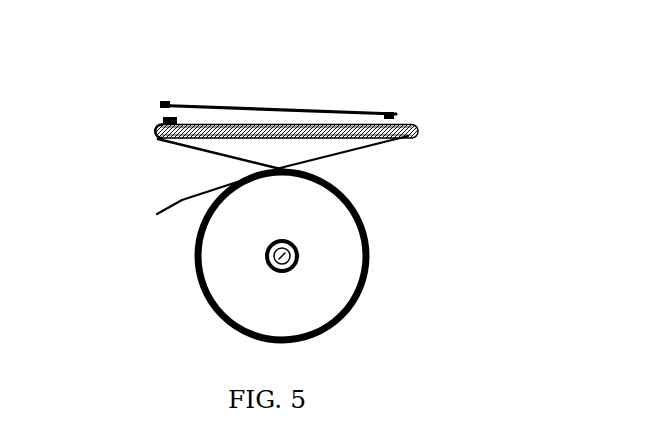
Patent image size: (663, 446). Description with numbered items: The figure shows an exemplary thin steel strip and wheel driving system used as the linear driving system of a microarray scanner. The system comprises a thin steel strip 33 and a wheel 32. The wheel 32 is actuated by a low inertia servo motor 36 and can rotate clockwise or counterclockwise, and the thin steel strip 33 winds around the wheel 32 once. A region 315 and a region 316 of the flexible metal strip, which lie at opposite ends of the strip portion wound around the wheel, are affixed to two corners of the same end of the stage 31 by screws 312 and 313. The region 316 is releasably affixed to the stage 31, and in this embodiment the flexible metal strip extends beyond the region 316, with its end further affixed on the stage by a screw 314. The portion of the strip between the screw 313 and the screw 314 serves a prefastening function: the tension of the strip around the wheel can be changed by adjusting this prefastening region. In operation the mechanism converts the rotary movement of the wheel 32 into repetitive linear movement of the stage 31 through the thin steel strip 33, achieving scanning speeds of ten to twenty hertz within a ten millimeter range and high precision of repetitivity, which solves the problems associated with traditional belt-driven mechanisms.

The stage 31 is at (331, 108).
The wheel 32 is at (353, 245).
The thin steel strip 33 is at (346, 73).
The low inertia servo motor 36 is at (383, 243).
The screw 312 is at (164, 121).
The screw 313 is at (231, 184).
The screw 314 is at (117, 67).
The region of the flexible metal strip 315 is at (157, 128).
The region of the flexible metal strip 316 is at (397, 118).